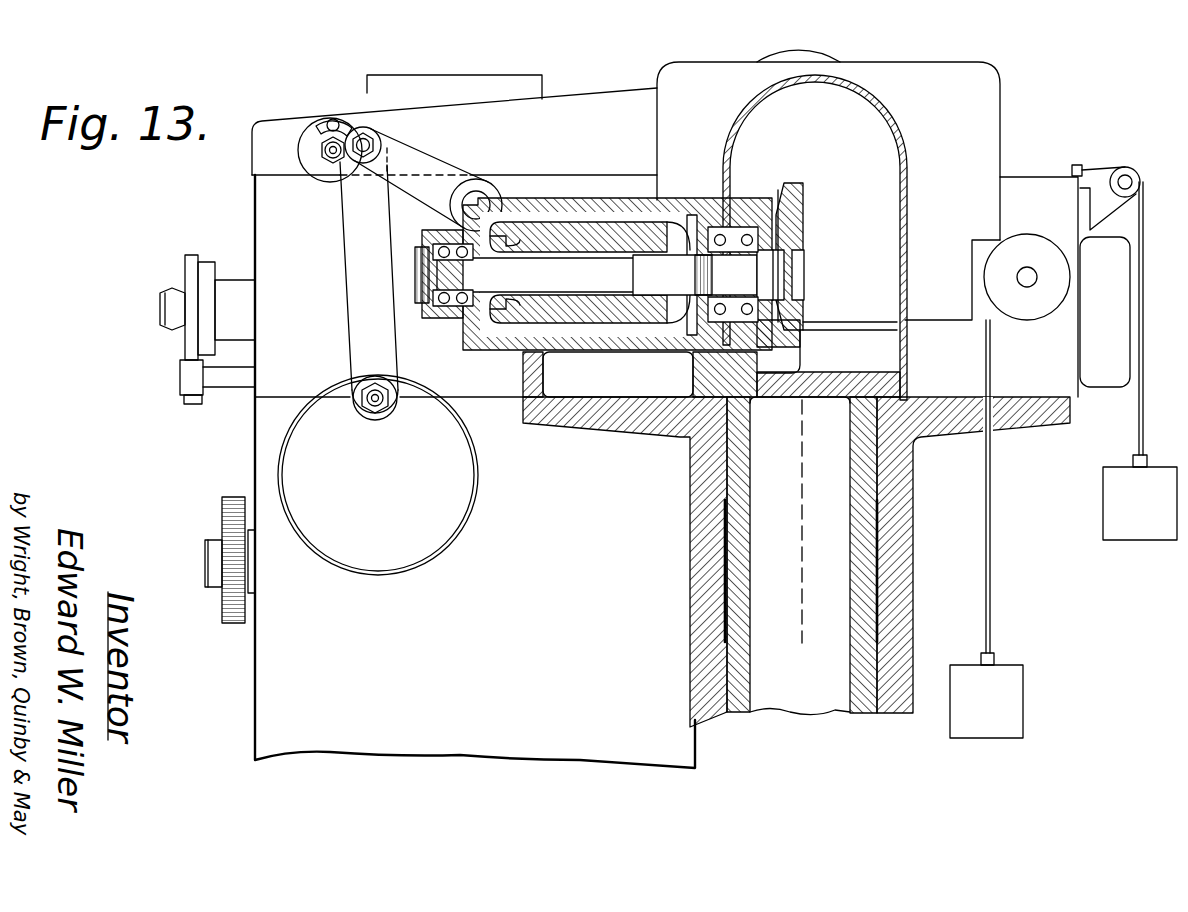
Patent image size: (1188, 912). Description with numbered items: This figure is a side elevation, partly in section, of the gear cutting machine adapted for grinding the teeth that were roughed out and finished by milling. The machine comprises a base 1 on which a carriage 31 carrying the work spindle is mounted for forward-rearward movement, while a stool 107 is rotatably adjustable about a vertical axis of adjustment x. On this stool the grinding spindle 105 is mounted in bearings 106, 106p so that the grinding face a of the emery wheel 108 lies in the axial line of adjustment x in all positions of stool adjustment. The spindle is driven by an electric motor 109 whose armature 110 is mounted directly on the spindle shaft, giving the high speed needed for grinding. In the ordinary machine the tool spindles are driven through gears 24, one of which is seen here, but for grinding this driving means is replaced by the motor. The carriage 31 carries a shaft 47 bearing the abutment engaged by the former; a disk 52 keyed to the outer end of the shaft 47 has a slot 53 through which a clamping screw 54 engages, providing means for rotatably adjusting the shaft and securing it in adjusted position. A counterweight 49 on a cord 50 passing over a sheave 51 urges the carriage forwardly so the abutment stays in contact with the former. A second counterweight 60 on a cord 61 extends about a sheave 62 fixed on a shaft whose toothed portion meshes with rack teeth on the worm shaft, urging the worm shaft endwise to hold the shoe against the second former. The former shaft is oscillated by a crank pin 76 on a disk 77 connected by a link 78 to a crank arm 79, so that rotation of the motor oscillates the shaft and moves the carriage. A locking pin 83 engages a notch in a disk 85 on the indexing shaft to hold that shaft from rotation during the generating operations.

The base 1 is at (398, 733).
The gear 24 is at (222, 512).
The carriage 31 is at (580, 97).
The shaft 47 is at (334, 164).
The counterweight 49 is at (1103, 488).
The cord 50 is at (1138, 413).
The sheave 51 is at (1131, 170).
The disk 52 is at (298, 151).
The slot 53 is at (320, 121).
The clamping screw 54 is at (334, 119).
The counterweight 60 is at (1012, 672).
The cord 61 is at (990, 560).
The sheave 62 is at (1040, 245).
The crank pin 76 is at (378, 412).
The disk 77 is at (462, 503).
The link 78 is at (350, 287).
The crank arm 79 is at (431, 160).
The locking pin 83 is at (258, 357).
The disk 85 is at (192, 255).
The grinding spindle 105 is at (572, 268).
The bearings 106 is at (466, 312).
The ball bearing (106') 106p is at (735, 318).
The stool 107 is at (902, 364).
The emery wheel 108 is at (795, 190).
The electric motor 109 is at (533, 212).
The armature 110 is at (596, 330).
The grinding face a is at (807, 192).
The axis of adjustment x is at (802, 556).